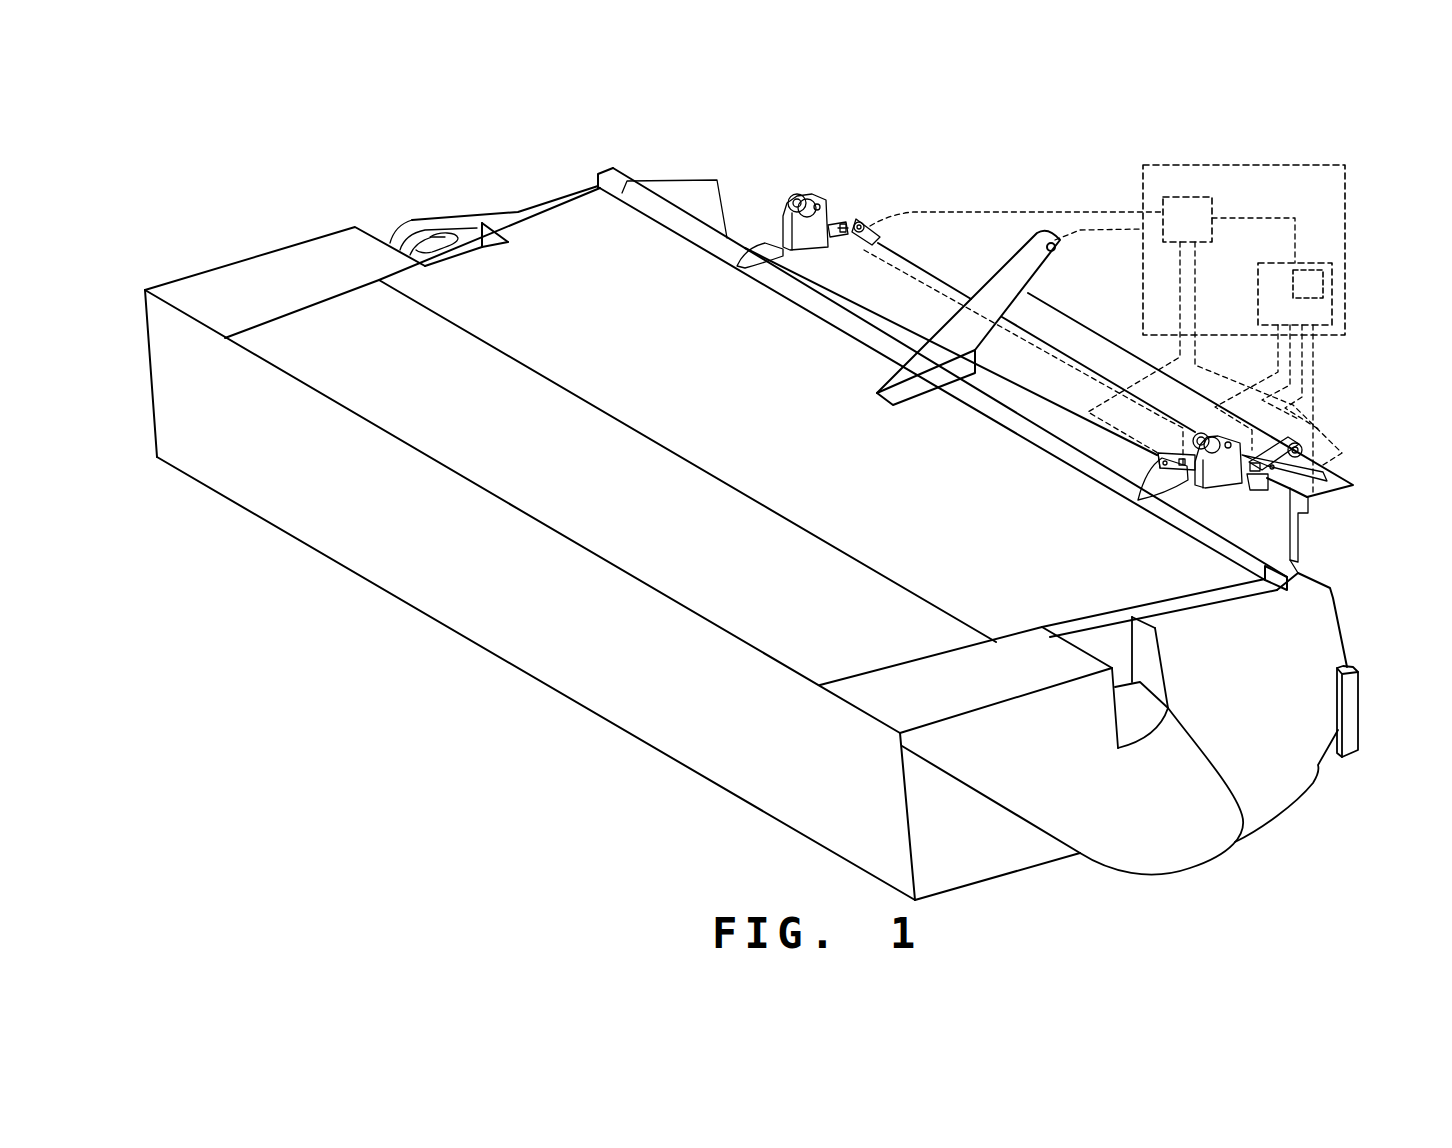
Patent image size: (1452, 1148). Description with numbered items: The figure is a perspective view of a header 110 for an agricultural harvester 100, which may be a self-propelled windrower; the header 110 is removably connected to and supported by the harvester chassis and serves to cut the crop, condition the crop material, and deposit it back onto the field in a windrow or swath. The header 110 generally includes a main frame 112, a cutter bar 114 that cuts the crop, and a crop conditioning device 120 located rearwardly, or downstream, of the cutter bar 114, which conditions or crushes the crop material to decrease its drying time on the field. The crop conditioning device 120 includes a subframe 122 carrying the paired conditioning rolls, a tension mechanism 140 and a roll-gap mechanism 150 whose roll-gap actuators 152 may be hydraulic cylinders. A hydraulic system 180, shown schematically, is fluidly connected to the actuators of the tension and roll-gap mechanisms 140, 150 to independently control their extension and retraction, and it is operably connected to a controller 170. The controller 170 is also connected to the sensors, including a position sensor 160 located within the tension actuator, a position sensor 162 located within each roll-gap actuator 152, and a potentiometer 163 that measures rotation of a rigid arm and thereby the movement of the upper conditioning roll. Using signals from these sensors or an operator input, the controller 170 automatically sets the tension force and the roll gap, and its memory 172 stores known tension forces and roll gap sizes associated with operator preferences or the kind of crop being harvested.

The agricultural harvester 100 is at (1290, 165).
The header 110 is at (605, 160).
The main frame 112 is at (537, 280).
The cutter bar 114 is at (565, 705).
The crop conditioning device 120 is at (1322, 556).
The subframe 122 is at (932, 266).
The tension mechanism 140 is at (1165, 502).
The roll-gap mechanism 150 is at (819, 175).
The roll-gap actuator 152 is at (857, 221).
The position sensor 160 is at (1185, 470).
The position sensor 162 is at (1275, 478).
The potentiometer 163 is at (1300, 520).
The controller 170 is at (1332, 315).
The memory 172 is at (1323, 285).
The hydraulic system 180 is at (1188, 197).